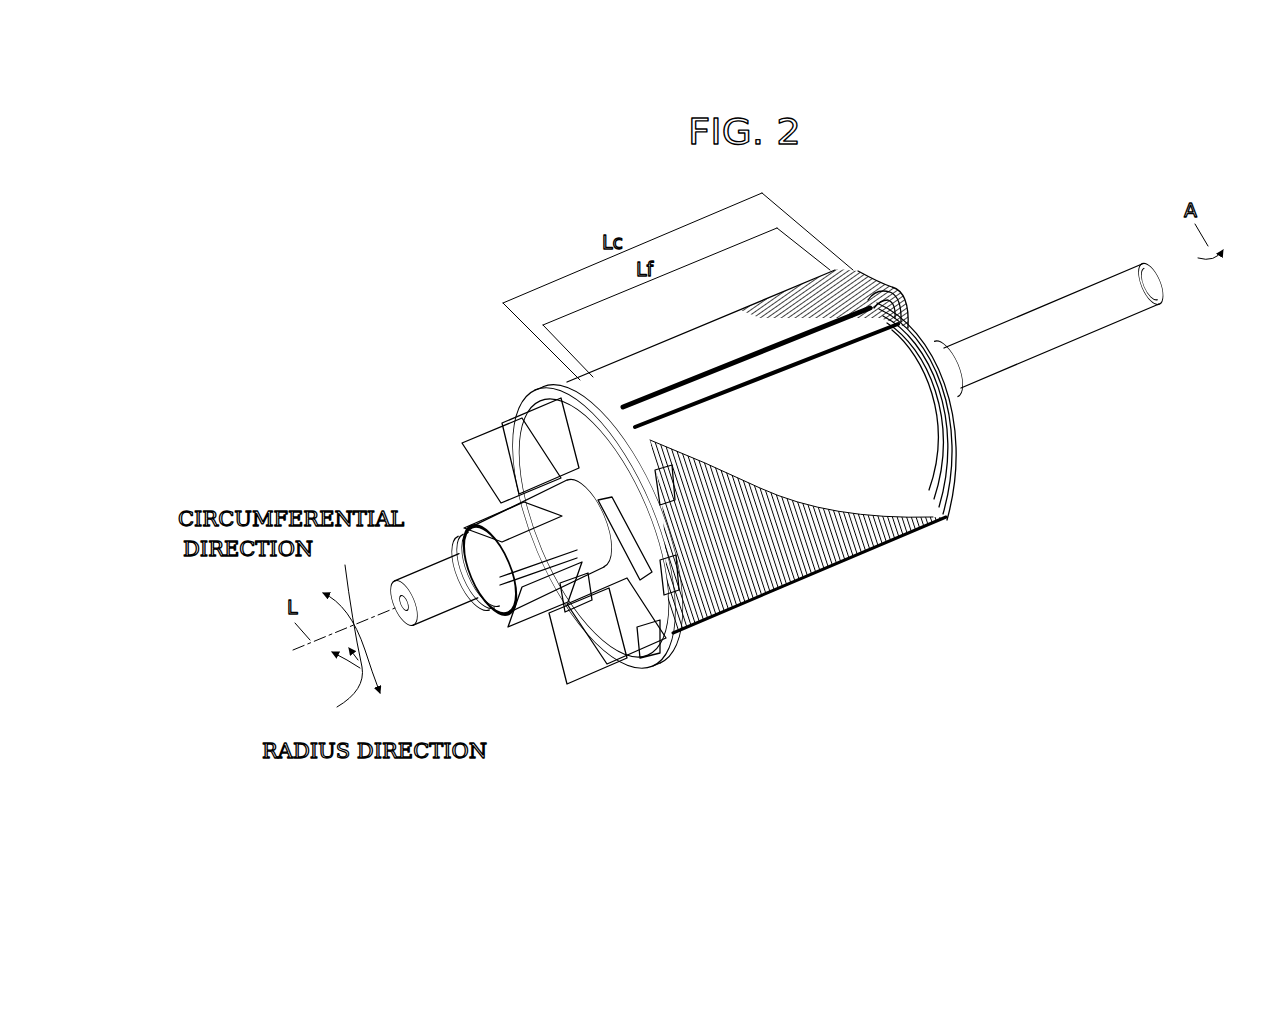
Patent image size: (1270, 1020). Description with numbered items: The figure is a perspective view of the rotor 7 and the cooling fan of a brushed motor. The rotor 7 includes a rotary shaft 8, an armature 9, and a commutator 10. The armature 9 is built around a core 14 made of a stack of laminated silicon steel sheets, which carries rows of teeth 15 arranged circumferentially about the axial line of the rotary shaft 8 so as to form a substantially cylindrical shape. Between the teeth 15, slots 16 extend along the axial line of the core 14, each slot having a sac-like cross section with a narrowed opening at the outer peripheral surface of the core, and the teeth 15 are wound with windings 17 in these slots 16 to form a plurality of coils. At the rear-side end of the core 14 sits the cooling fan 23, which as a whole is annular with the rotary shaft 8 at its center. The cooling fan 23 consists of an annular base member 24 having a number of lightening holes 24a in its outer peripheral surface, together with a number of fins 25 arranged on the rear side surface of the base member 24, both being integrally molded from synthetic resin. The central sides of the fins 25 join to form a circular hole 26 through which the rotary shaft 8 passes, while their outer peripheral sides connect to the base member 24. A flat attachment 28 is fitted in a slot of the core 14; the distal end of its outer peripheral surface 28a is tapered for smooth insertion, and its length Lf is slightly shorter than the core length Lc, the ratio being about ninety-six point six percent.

The rotor 7 is at (383, 382).
The rotary shaft 8 is at (433, 577).
The armature 9 is at (623, 352).
The commutator 10 is at (497, 523).
The core 14 is at (833, 573).
The teeth 15 is at (883, 553).
The slots 16 is at (870, 313).
The windings 17 is at (933, 322).
The cooling fan 23 is at (643, 660).
The base member 24 is at (667, 647).
The lightening holes 24a is at (705, 625).
The fins 25 is at (630, 655).
The circular hole 26 is at (567, 577).
The flat attachment 28 is at (745, 372).
The outer peripheral surface 28a is at (690, 372).